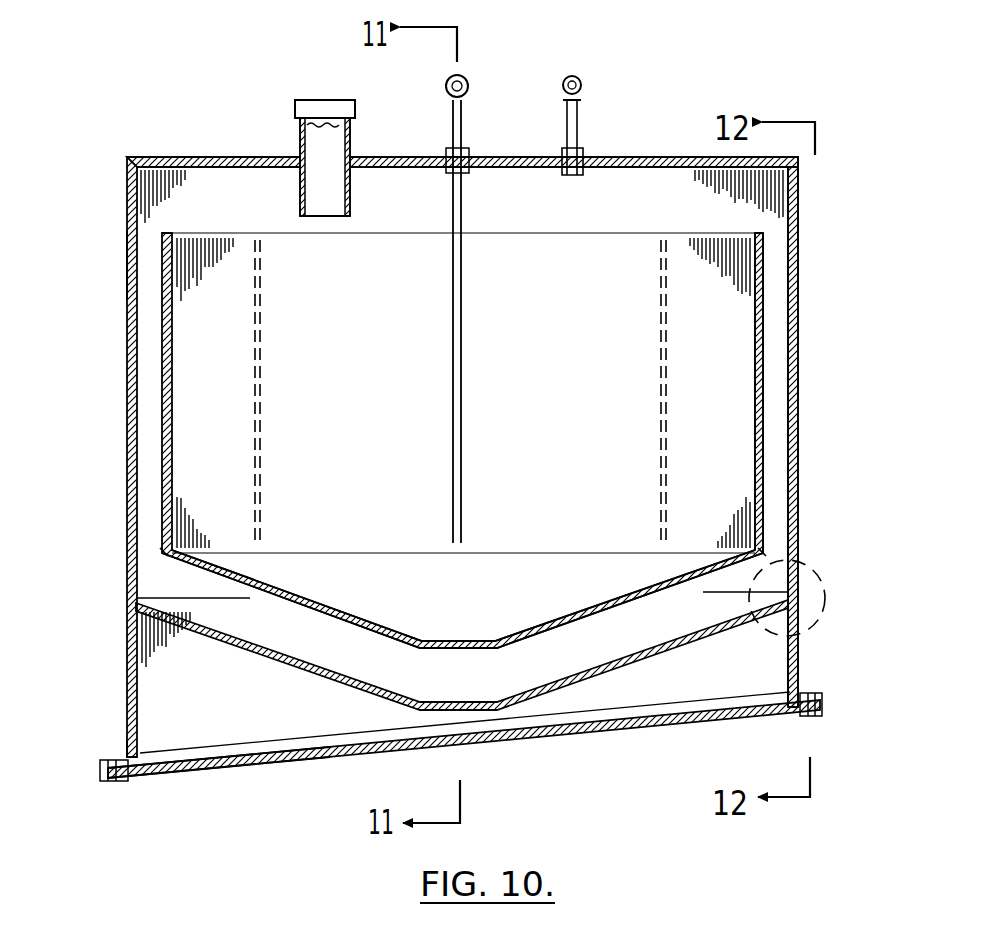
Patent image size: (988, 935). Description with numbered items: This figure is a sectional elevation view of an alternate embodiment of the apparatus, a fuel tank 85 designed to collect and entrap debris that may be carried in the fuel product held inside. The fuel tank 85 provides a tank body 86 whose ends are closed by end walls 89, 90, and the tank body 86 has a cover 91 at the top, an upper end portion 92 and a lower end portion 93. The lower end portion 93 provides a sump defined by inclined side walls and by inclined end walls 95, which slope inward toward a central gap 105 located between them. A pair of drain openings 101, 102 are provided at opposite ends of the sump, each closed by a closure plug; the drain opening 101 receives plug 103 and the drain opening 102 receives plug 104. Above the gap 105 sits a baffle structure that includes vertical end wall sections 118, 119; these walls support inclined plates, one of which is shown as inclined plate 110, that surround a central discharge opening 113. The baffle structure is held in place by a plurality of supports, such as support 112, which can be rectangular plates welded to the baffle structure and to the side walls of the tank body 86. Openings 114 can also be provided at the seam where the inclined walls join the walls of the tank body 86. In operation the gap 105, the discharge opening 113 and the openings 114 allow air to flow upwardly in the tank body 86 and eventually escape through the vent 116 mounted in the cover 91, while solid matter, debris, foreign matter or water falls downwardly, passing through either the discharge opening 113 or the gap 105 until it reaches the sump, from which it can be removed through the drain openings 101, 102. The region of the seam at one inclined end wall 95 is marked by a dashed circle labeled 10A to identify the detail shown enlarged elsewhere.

The fuel tank 85 is at (662, 92).
The tank body 86 is at (799, 290).
The end wall 89 is at (133, 465).
The end wall 90 is at (799, 415).
The cover 91 is at (234, 157).
The upper end portion 92 is at (112, 242).
The lower end portion 93 is at (132, 802).
The inclined end walls 95 is at (300, 675).
The drain opening 101 is at (165, 770).
The drain opening 102 is at (758, 728).
The plug 103 is at (108, 768).
The plug 104 is at (820, 698).
The gap 105 is at (455, 698).
The inclined plate 110 is at (358, 628).
The support 112 is at (260, 420).
The discharge opening 113 is at (449, 632).
The opening 114 is at (158, 598).
The vent 116 is at (323, 98).
The vertical end wall section 118 is at (162, 335).
The vertical end wall section 119 is at (765, 356).
The detail area 10A is at (810, 590).